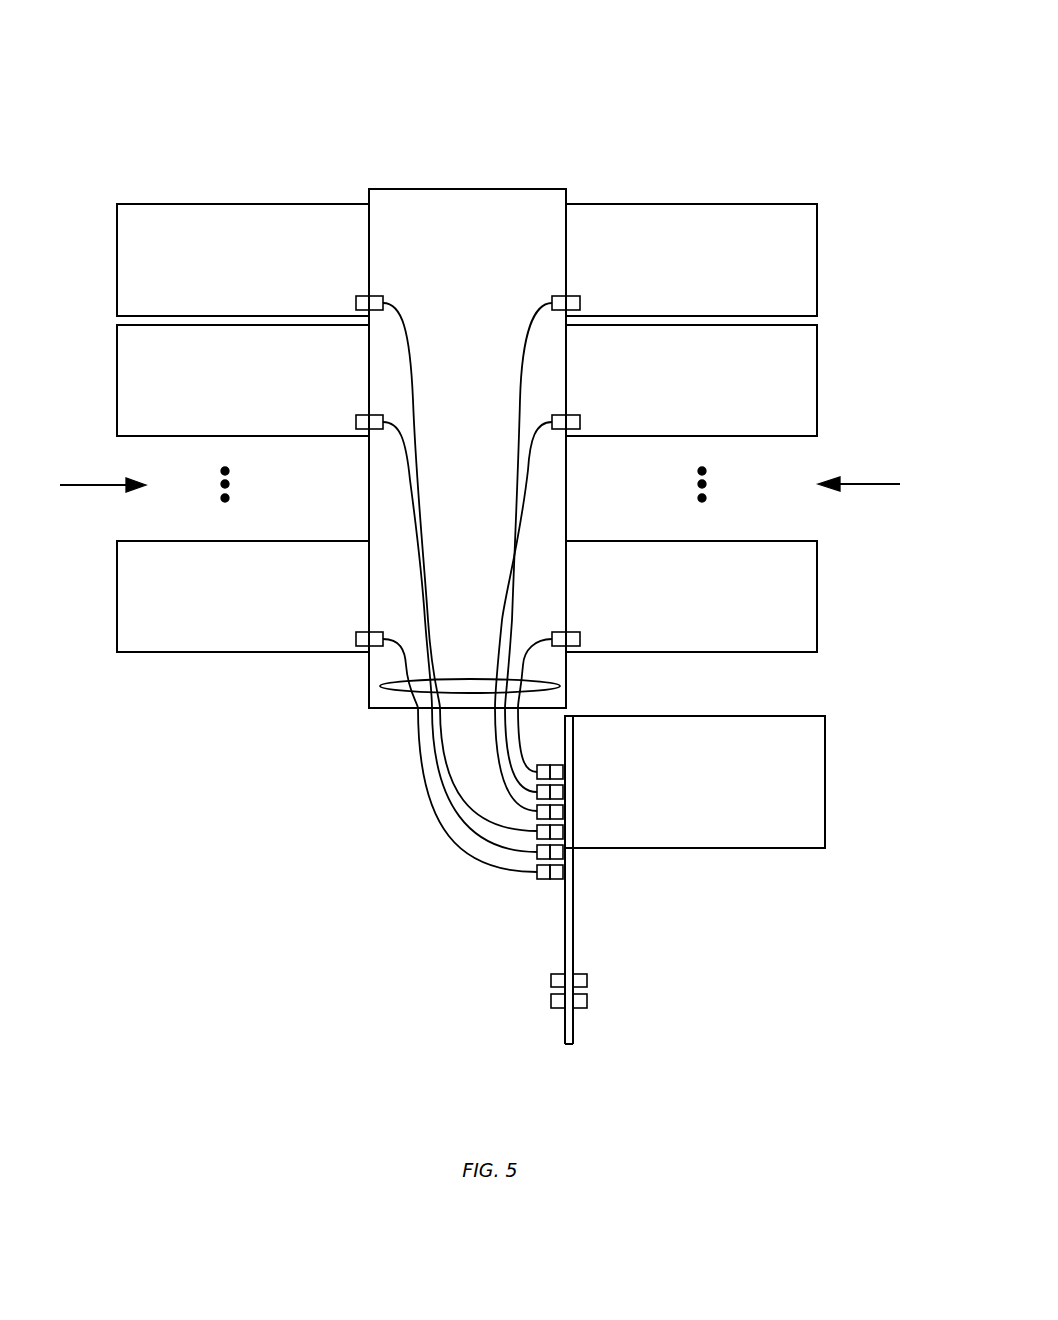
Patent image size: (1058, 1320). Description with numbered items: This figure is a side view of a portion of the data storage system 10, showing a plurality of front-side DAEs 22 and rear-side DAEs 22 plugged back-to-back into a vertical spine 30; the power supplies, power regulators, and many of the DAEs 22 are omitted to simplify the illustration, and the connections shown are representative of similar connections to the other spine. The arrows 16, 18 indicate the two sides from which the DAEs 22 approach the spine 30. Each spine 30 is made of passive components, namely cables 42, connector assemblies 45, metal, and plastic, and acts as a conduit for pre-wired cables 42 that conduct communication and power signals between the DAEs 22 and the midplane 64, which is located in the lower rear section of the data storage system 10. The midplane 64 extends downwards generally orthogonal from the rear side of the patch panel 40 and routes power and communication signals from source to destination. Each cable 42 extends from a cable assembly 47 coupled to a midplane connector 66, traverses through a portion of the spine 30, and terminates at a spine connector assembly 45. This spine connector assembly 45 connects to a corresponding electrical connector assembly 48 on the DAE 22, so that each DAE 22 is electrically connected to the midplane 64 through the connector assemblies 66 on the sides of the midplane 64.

The data storage system 10 is at (112, 88).
The input side 16 is at (83, 485).
The output side 18 is at (877, 485).
The DAE 22 is at (231, 271).
The spine 30 is at (455, 228).
The patch panel 40 is at (763, 775).
The cable 42 is at (376, 688).
The spine connector assembly 45 is at (378, 300).
The cable assembly 47 is at (547, 770).
The electrical connector assembly 48 is at (356, 303).
The midplane 64 is at (575, 898).
The electrical connector assembly 66 is at (556, 772).